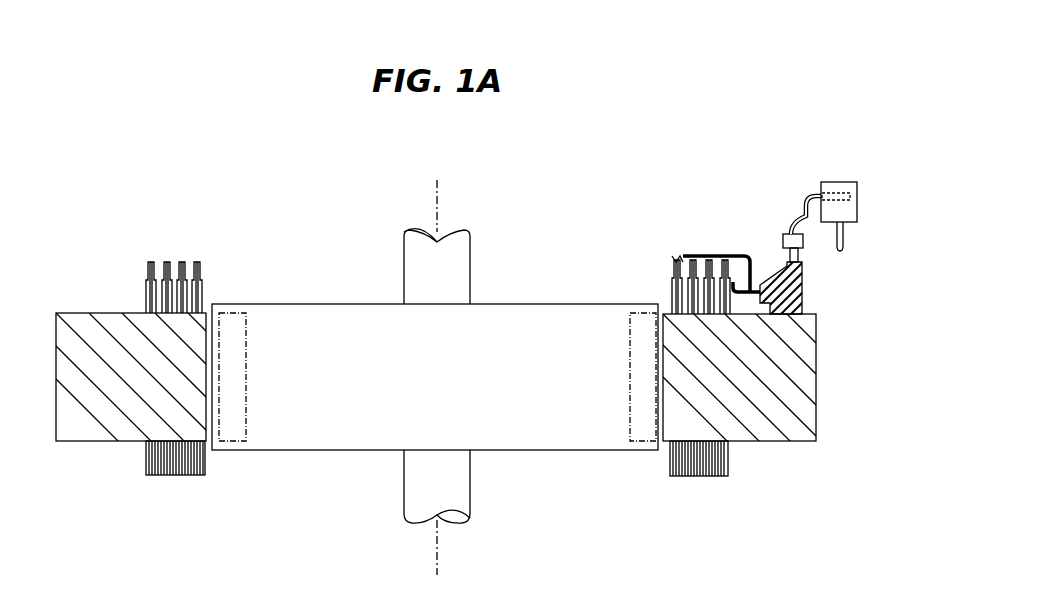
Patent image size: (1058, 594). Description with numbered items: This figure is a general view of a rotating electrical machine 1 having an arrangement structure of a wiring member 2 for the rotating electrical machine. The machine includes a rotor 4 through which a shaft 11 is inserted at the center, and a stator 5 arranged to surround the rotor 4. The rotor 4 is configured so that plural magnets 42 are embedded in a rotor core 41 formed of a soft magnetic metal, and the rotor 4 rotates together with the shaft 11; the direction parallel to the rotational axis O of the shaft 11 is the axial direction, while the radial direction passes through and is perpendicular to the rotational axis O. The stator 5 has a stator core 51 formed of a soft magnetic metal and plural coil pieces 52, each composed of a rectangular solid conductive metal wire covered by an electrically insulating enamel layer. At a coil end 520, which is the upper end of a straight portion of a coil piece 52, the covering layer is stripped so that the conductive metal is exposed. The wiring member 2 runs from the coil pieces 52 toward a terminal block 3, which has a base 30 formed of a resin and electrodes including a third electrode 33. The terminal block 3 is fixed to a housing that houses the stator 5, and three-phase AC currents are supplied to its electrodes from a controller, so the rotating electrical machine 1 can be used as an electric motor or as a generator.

The rotating electrical machine 1 is at (175, 184).
The rotational axis O is at (440, 194).
The shaft 11 is at (470, 262).
The rotor 4 is at (437, 362).
The rotor core 41 is at (313, 302).
The magnets 42 is at (228, 312).
The stator 5 is at (468, 372).
The stator core 51 is at (817, 382).
The coil pieces 52 is at (437, 372).
The coil end 520 is at (197, 262).
The wiring member 2 is at (753, 238).
The terminal block 3 is at (823, 237).
The base 30 is at (839, 181).
The third electrode 33 is at (844, 238).